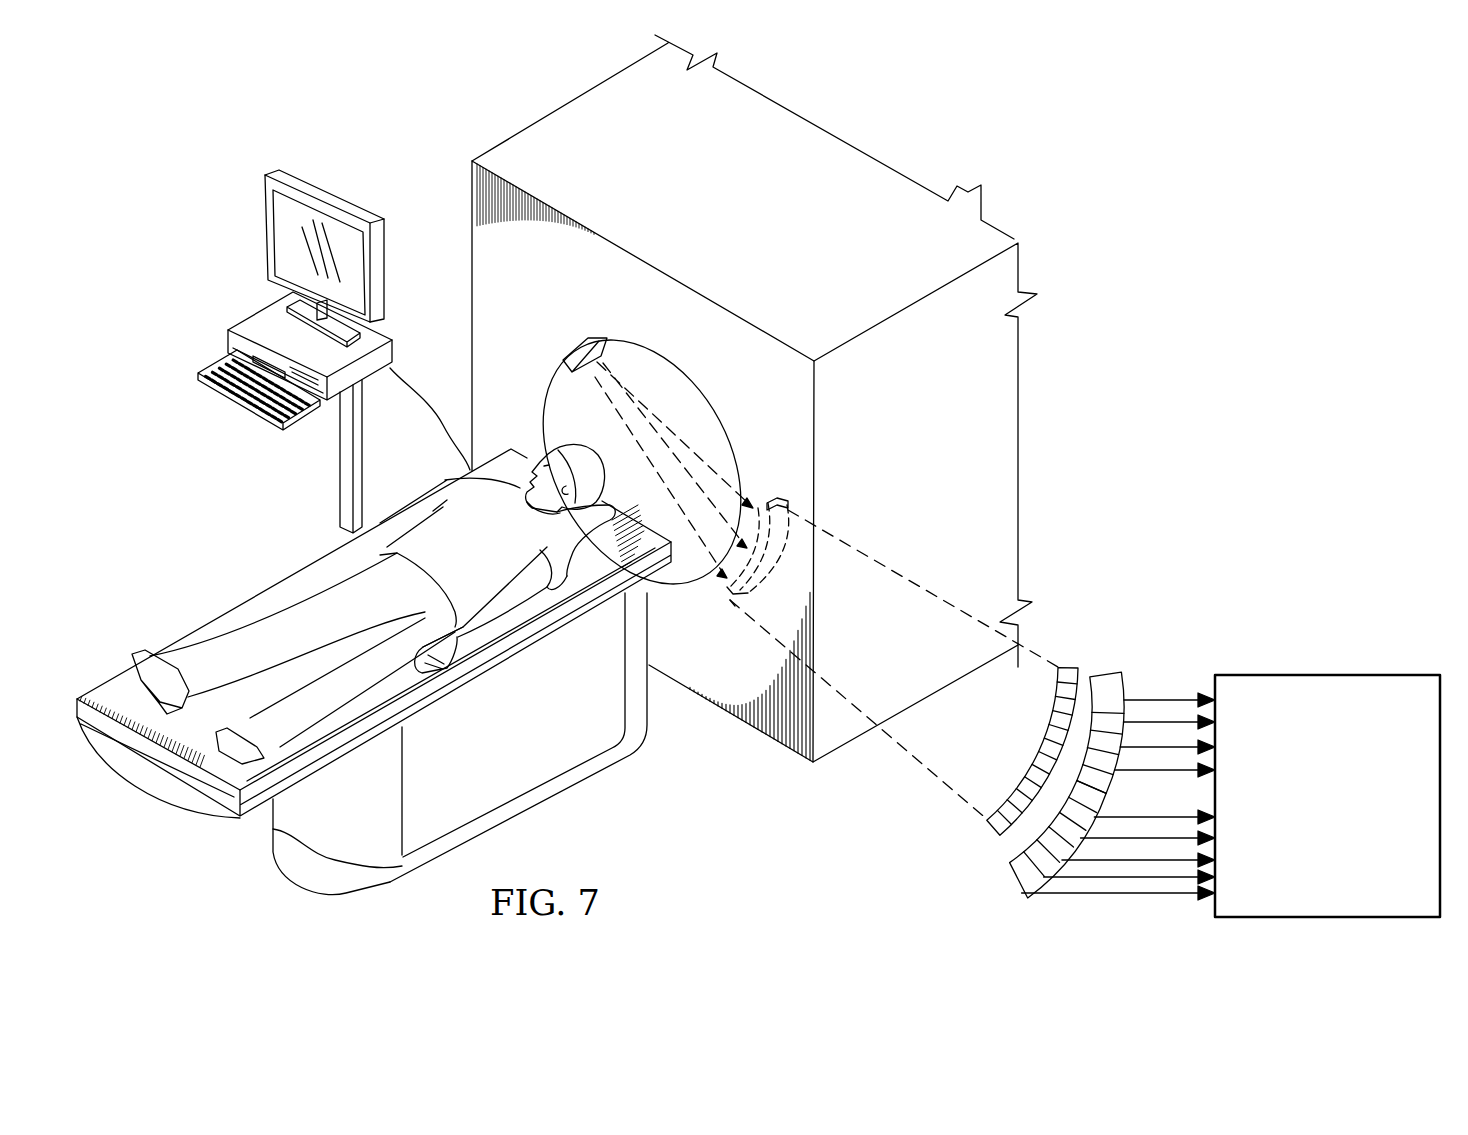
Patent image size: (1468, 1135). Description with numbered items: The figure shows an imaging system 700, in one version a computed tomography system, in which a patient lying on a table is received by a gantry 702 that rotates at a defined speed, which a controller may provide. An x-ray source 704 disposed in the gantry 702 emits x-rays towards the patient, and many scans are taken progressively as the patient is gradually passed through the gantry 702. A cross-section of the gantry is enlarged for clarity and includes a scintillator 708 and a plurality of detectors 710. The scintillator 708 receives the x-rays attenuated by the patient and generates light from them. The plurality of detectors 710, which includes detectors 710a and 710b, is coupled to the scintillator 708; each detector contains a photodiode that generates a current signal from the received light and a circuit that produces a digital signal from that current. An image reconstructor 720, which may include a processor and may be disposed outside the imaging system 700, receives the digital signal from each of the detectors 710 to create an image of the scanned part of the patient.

The imaging system 700 is at (1178, 118).
The gantry 702 is at (703, 403).
The x-ray source 704 is at (573, 345).
The scintillator 708 is at (1065, 666).
The plurality of detectors 710 is at (1107, 759).
The detector 710a is at (1112, 692).
The detector 710b is at (1102, 791).
The image reconstructor 720 is at (1305, 842).